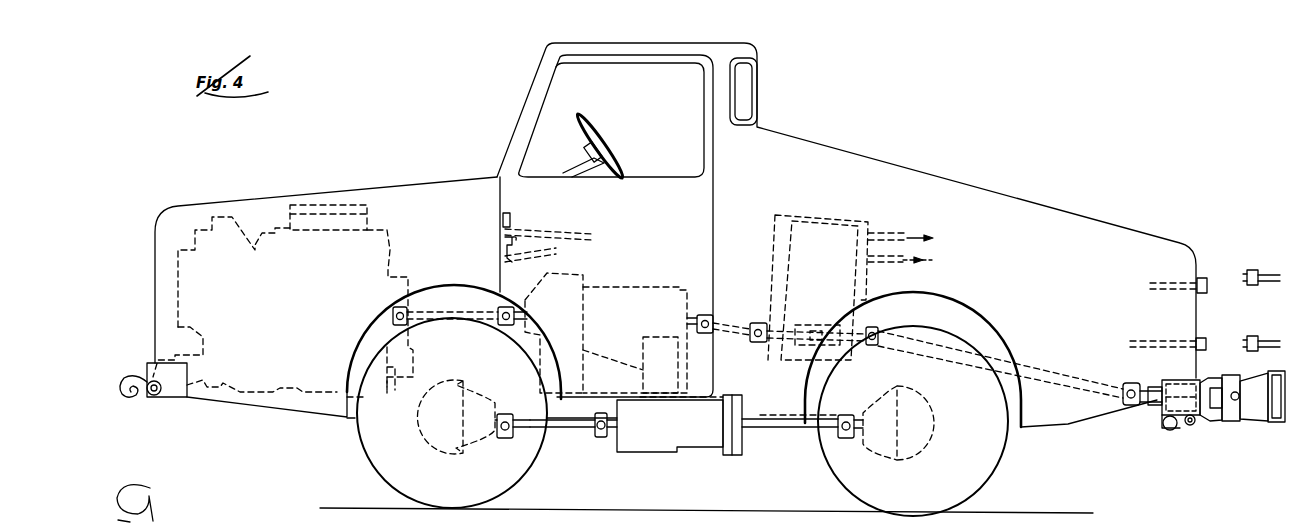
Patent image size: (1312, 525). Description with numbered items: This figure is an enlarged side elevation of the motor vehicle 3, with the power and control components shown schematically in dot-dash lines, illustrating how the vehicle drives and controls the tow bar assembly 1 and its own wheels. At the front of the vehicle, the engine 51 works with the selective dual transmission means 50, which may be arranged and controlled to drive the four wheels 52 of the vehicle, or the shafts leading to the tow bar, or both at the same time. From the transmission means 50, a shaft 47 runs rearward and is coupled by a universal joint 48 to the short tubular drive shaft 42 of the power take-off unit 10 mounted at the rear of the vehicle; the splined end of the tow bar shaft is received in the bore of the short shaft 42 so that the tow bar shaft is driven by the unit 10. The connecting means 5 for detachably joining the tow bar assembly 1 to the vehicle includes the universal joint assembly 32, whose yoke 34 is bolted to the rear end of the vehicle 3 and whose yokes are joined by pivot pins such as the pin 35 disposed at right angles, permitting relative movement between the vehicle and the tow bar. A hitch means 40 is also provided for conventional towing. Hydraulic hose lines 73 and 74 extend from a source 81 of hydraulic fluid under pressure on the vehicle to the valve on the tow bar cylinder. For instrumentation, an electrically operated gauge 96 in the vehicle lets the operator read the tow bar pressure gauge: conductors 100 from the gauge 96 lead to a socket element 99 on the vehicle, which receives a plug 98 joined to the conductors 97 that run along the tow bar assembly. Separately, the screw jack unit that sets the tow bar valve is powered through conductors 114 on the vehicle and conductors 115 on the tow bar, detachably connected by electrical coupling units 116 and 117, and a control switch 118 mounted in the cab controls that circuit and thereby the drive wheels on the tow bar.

The tow bar assembly 1 is at (1280, 424).
The motor vehicle 3 is at (1132, 228).
The connecting means 5 is at (1250, 380).
The power take-off unit 10 is at (1210, 396).
The universal joint assembly 32 is at (1232, 421).
The yoke 34 is at (1222, 412).
The pivot pin 35 is at (1235, 402).
The hitch means 40 is at (1170, 431).
The short tubular drive shaft 42 is at (1146, 397).
The shaft 47 is at (1066, 371).
The universal joint 48 is at (1128, 383).
The selective dual transmission means 50 is at (632, 356).
The engine 51 is at (366, 260).
The wheels 52 is at (522, 467).
The hydraulic hose line 73 is at (893, 233).
The hydraulic hose line 74 is at (887, 262).
The source of hydraulic fluid under pressure 81 is at (830, 226).
The electrically operated gauge 96 is at (505, 219).
The electrical conductors 97 is at (1262, 275).
The plug 98 is at (1252, 270).
The socket element 99 is at (1200, 277).
The conductors 100 is at (572, 236).
The conductors 114 is at (546, 250).
The conductors 115 is at (1262, 340).
The electrical coupling unit 116 is at (1206, 343).
The electrical coupling unit 117 is at (1252, 336).
The control switch 118 is at (505, 244).